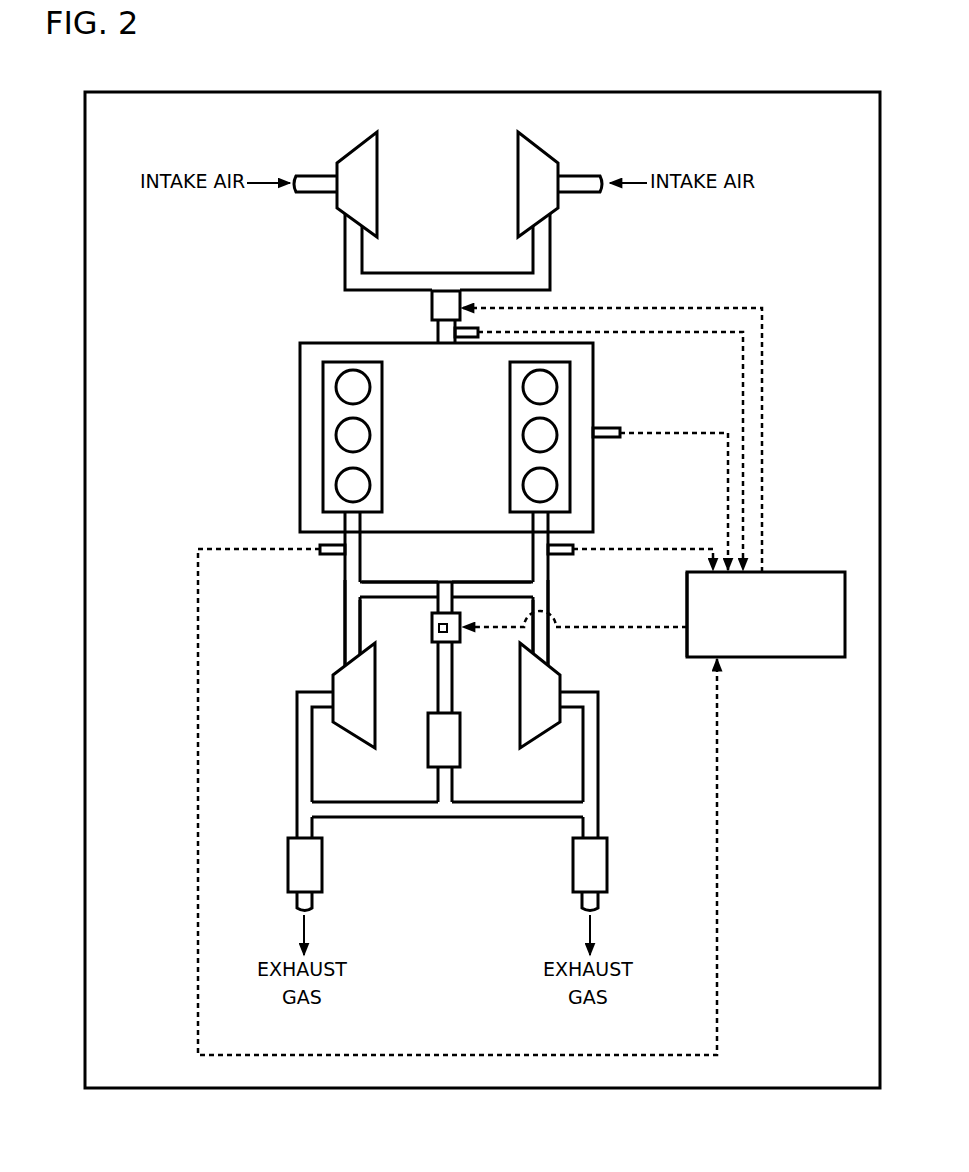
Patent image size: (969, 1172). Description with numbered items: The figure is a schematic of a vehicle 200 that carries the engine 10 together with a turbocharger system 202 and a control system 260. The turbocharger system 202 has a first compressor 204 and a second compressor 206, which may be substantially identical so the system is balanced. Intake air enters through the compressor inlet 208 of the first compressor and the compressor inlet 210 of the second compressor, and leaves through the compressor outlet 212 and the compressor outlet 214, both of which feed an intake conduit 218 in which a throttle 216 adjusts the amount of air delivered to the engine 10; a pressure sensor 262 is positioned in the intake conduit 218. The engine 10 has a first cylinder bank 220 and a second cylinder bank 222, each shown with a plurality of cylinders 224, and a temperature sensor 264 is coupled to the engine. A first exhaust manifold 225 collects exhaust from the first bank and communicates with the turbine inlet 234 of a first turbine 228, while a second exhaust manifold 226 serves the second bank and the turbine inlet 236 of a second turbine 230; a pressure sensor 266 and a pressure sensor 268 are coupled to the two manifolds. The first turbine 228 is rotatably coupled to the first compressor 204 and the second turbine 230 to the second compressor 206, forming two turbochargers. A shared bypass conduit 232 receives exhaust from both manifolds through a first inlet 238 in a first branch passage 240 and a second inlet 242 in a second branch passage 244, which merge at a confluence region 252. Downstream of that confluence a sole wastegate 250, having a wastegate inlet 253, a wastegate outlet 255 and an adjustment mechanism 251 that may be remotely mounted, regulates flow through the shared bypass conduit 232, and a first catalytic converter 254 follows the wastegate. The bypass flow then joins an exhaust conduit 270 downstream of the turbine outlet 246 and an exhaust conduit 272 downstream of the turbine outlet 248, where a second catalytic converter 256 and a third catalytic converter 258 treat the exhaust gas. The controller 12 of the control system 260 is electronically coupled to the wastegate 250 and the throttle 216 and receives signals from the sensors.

The vehicle 200 is at (118, 92).
The turbocharger system 202 is at (812, 196).
The first compressor 204 is at (358, 150).
The second compressor 206 is at (538, 150).
The compressor inlet 208 is at (334, 183).
The compressor inlet 210 is at (563, 183).
The compressor outlet 212 is at (355, 233).
The compressor outlet 214 is at (541, 233).
The throttle 216 is at (432, 308).
The intake conduit 218 is at (438, 333).
The pressure sensor 262 is at (479, 332).
The engine 10 is at (436, 403).
The first cylinder bank 220 is at (386, 461).
The second cylinder bank 222 is at (507, 461).
The cylinders 224 is at (370, 387).
The temperature sensor 264 is at (606, 440).
The first exhaust manifold 225 is at (360, 574).
The second exhaust manifold 226 is at (533, 574).
The pressure sensor 266 is at (330, 555).
The pressure sensor 268 is at (562, 555).
The first inlet 238 is at (343, 591).
The second inlet 242 is at (550, 591).
The confluence region 252 is at (447, 594).
The first branch passage 240 is at (394, 582).
The second branch passage 244 is at (504, 582).
The turbine inlet 234 is at (354, 646).
The turbine inlet 236 is at (539, 646).
The wastegate 250 is at (432, 640).
The adjustment mechanism 251 is at (439, 628).
The wastegate inlet 253 is at (456, 615).
The wastegate outlet 255 is at (446, 649).
The shared bypass conduit 232 is at (454, 710).
The first catalytic converter 254 is at (461, 748).
The first turbine 228 is at (350, 733).
The second turbine 230 is at (542, 733).
The turbine outlet 246 is at (326, 698).
The turbine outlet 248 is at (566, 698).
The exhaust conduit 270 is at (297, 827).
The exhaust conduit 272 is at (598, 827).
The second catalytic converter 256 is at (288, 872).
The third catalytic converter 258 is at (607, 872).
The controller 12 is at (756, 639).
The control system 260 is at (860, 620).